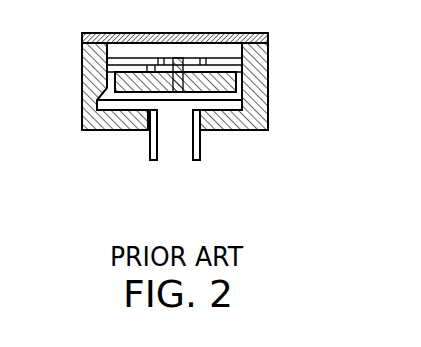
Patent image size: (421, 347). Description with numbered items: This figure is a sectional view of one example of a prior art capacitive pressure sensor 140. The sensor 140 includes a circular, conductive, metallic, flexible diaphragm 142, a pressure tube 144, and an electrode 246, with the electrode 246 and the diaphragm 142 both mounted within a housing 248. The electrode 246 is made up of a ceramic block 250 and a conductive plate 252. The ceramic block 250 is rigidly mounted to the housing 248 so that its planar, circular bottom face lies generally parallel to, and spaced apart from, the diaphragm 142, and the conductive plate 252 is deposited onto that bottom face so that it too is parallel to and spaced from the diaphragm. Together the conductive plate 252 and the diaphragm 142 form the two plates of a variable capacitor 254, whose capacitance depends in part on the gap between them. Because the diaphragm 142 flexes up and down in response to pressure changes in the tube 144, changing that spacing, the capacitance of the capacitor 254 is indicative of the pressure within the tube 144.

The capacitive pressure sensor 140 is at (180, 80).
The housing 248 is at (82, 47).
The ceramic block 250 is at (147, 65).
The electrode 246 is at (214, 74).
The variable capacitor 254 is at (218, 114).
The conductive plate 252 is at (173, 46).
The flexible diaphragm 142 is at (182, 98).
The pressure tube 144 is at (148, 150).